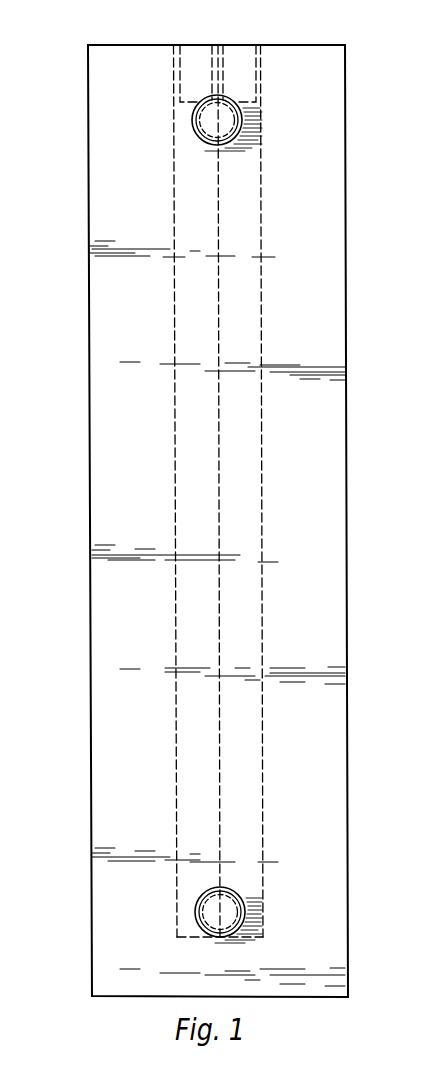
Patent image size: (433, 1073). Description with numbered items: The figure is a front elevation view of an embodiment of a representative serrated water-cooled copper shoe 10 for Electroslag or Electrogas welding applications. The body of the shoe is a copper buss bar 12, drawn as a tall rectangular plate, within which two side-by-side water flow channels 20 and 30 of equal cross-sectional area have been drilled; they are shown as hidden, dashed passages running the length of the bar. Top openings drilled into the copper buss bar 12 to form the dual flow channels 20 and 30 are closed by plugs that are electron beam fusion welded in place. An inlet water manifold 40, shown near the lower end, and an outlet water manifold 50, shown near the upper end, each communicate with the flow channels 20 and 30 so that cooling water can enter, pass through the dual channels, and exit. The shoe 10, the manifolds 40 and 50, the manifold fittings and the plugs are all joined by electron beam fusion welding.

The serrated water-cooled copper shoe 10 is at (64, 96).
The copper buss bar 12 is at (118, 143).
The flow channel 20 is at (174, 217).
The flow channel 30 is at (260, 203).
The inlet water manifold 40 is at (200, 919).
The outlet water manifold 50 is at (242, 116).